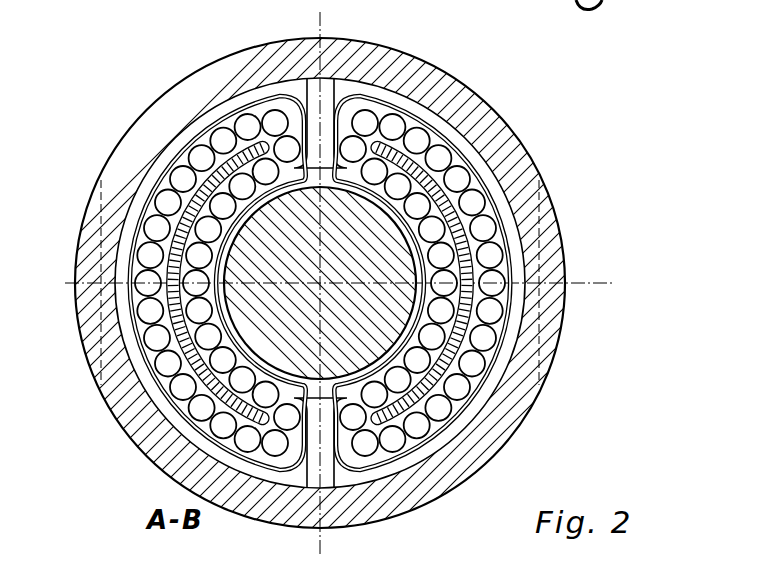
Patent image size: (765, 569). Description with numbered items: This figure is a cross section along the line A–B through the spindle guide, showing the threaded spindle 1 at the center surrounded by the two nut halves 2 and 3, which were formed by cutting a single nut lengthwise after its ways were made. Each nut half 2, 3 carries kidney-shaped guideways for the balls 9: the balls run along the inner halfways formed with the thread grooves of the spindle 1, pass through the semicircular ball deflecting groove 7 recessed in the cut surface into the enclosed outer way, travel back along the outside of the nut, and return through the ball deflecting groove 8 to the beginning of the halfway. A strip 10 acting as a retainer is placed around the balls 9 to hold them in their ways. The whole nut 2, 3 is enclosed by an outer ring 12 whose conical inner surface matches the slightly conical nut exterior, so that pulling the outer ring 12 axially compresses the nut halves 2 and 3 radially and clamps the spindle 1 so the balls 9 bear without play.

The threaded spindle 1 is at (252, 242).
The nut half 2 is at (218, 174).
The nut half 3 is at (418, 175).
The ball deflecting groove 7 is at (367, 97).
The ball deflecting groove 8 is at (380, 470).
The balls 9 is at (193, 312).
The strip 10 is at (193, 205).
The outer ring 12 is at (152, 128).